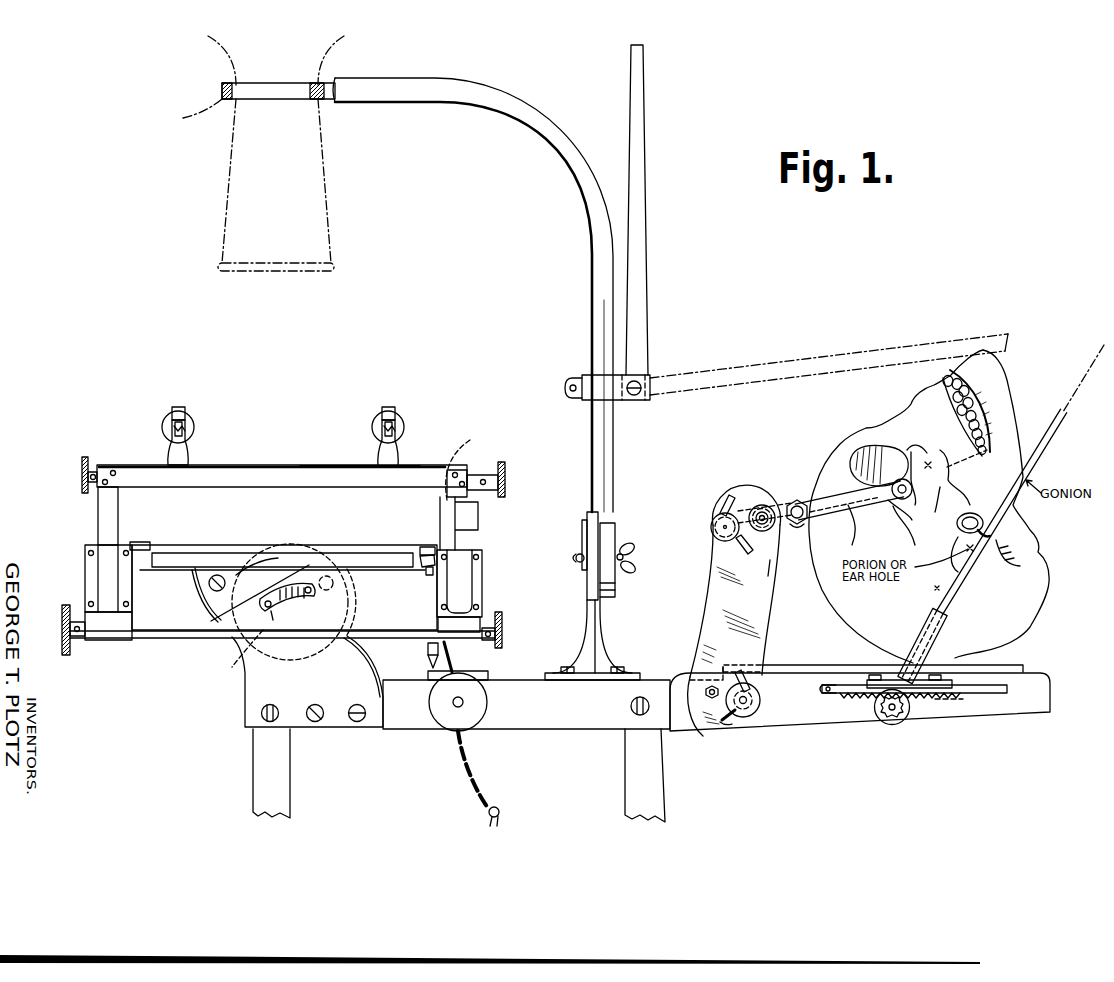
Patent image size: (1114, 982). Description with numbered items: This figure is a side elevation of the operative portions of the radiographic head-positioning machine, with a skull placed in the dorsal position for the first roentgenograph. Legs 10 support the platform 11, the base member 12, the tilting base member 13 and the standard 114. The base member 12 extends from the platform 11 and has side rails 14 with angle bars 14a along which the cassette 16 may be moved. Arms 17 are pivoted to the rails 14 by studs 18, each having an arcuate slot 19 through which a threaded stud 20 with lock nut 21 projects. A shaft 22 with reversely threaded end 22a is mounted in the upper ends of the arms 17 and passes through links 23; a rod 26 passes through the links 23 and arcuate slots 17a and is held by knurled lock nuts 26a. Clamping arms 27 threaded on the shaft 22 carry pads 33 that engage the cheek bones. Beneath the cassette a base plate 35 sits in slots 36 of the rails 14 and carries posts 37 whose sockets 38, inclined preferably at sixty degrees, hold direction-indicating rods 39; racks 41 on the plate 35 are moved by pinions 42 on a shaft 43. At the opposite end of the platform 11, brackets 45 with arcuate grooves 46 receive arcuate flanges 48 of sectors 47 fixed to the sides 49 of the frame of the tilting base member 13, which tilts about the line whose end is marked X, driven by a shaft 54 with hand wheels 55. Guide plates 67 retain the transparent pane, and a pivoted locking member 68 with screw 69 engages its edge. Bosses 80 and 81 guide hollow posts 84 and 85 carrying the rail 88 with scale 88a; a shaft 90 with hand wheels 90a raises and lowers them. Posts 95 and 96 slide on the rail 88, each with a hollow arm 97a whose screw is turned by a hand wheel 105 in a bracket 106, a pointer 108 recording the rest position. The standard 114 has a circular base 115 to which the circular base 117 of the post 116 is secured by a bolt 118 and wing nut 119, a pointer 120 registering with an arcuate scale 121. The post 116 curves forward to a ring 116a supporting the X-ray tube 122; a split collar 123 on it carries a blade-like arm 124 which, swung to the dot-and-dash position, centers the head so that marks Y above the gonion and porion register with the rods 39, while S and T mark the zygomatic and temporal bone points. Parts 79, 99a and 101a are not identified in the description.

The legs 10 is at (268, 773).
The platform 11 is at (526, 704).
The base member 12 is at (1010, 717).
The tilting base member 13 is at (163, 651).
The side rails 14 is at (748, 706).
The angle bars 14a is at (782, 678).
The cassette 16 is at (349, 560).
The arms 17 is at (735, 581).
The arcuate slots 17a is at (768, 567).
The stud 18 is at (708, 698).
The arcuate slot 19 is at (725, 724).
The threaded stud 20 is at (750, 712).
The ornamental lock nut 21 is at (743, 718).
The shaft 22 is at (767, 508).
The reversely threaded end portion 22a is at (754, 503).
The links 23 is at (793, 534).
The rod 26 is at (718, 538).
The knurled lock nuts 26a is at (721, 513).
The clamping arms 27 is at (825, 513).
The pad 33 is at (913, 455).
The base plate 35 is at (853, 689).
The slots 36 is at (830, 684).
The post 37 is at (934, 624).
The socket 38 is at (920, 638).
The direction-indicating rods 39 is at (953, 598).
The rack 41 is at (945, 700).
The pinions 42 is at (882, 718).
The shaft 43 is at (894, 725).
The brackets 45 is at (307, 681).
The arcuate groove 46 is at (233, 660).
The sectors 47 is at (215, 588).
The arcuate flanges 48 is at (218, 612).
The sides 49 is at (284, 602).
The shaft 54 is at (453, 702).
The knurled hand wheel 55 is at (455, 720).
The guide plates 67 is at (140, 542).
The pivoted locking member 68 is at (432, 576).
The screw 69 is at (422, 556).
The swing path 79 is at (449, 462).
The boss 80 is at (92, 580).
The boss 81 is at (482, 596).
The hollow post 84 is at (105, 512).
The hollow post 85 is at (470, 518).
The rail 88 is at (268, 478).
The scale 88a is at (307, 466).
The shaft 90 is at (336, 636).
The knurled hand wheels 90a is at (66, 655).
The post 95 is at (186, 452).
The post 96 is at (386, 455).
The hollow arm 97a is at (182, 426).
The knob 99a is at (86, 461).
The knob 101a is at (505, 470).
The knurled hand wheel 105 is at (165, 430).
The bracket 106 is at (179, 407).
The pointer 108 is at (170, 418).
The standard 114 is at (592, 622).
The circular base 115 is at (599, 584).
The post 116 is at (605, 433).
The ring 116a is at (220, 97).
The circular base 117 is at (615, 528).
The bolt 118 is at (576, 562).
The wing nut 119 is at (634, 545).
The pointer 120 is at (582, 548).
The arcuate scale 121 is at (588, 516).
The X-ray tube 122 is at (242, 186).
The split collar 123 is at (590, 386).
The blade-like arm 124 is at (642, 243).
The end of film axis line X is at (272, 553).
The zygomatic bone point S is at (932, 464).
The marks Y is at (1022, 476).
The temporal bone point T is at (932, 593).